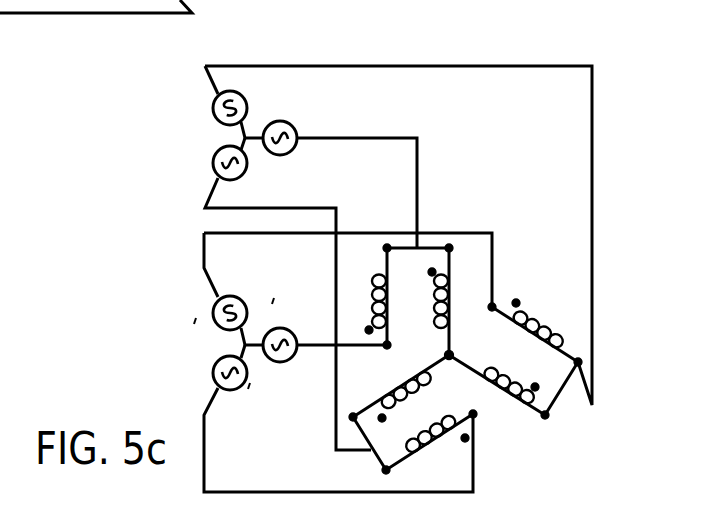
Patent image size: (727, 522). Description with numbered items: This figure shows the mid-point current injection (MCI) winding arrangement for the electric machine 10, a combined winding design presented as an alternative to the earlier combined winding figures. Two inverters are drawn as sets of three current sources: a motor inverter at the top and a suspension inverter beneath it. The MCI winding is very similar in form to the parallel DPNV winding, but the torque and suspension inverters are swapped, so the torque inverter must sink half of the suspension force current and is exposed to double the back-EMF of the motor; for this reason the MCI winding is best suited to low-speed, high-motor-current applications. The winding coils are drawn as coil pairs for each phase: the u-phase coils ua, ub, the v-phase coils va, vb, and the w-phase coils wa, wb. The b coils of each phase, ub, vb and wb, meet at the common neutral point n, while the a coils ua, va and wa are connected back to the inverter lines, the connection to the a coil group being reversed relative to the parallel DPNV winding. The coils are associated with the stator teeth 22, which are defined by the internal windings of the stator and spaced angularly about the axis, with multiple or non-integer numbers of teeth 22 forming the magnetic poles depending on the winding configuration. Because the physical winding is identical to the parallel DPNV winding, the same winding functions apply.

The electric machine 10 is at (574, 31).
The stator teeth 22 is at (543, 323).
The neutral point n is at (457, 347).
The u-phase winding a ua is at (390, 298).
The u-phase winding b ub is at (453, 301).
The v-phase winding a va is at (535, 332).
The v-phase winding b vb is at (513, 387).
The w-phase winding a wa is at (415, 442).
The w-phase winding b wb is at (399, 388).